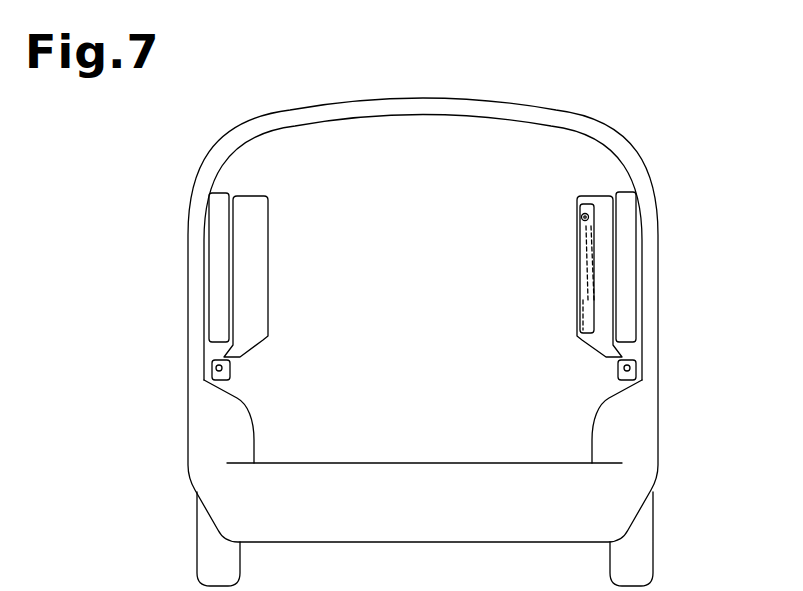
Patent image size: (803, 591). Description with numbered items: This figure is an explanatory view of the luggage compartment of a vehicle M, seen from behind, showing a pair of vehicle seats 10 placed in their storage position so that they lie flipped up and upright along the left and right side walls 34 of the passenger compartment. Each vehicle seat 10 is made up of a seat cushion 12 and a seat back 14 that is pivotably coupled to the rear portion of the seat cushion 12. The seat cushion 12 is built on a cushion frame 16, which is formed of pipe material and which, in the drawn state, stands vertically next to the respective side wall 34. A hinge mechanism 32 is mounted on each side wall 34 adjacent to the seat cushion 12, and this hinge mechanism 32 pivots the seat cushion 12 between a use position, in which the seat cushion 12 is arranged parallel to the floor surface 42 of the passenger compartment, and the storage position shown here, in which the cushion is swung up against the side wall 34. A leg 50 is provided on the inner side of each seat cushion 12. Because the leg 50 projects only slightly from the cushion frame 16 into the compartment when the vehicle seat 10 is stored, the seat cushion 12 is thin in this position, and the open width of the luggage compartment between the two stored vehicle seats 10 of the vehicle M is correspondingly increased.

The vehicle seat 10 is at (321, 182).
The seat cushion 12 is at (268, 277).
The seat back 14 is at (229, 193).
The cushion frame 16 is at (580, 318).
The hinge mechanism 32 is at (212, 366).
The side wall 34 is at (242, 398).
The floor surface 42 is at (427, 463).
The leg 50 is at (578, 218).
The vehicle M is at (656, 179).